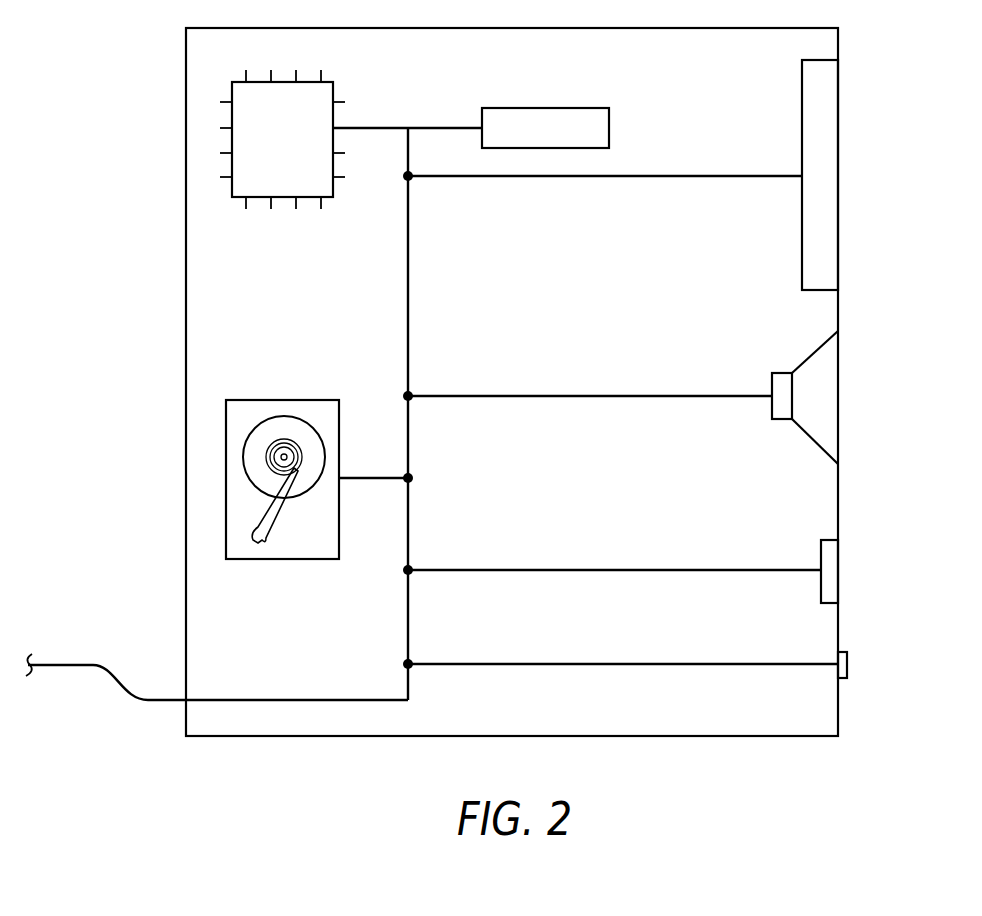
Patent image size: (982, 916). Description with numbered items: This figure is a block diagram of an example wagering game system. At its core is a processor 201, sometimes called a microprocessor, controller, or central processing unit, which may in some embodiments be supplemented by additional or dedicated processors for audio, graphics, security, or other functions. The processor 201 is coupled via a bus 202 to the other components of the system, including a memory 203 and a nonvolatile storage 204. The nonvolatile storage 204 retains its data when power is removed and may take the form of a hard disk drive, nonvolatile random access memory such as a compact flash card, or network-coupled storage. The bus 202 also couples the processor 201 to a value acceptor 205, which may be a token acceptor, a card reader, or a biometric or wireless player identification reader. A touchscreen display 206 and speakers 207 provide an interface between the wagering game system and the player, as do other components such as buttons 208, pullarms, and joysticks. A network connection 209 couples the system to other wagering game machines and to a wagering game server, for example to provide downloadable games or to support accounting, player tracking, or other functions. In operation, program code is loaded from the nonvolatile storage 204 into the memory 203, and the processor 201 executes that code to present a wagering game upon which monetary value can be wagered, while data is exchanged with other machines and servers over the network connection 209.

The processor 201 is at (305, 80).
The bus 202 is at (445, 127).
The memory 203 is at (545, 108).
The nonvolatile storage 204 is at (283, 400).
The value acceptor 205 is at (840, 572).
The touchscreen display 206 is at (840, 176).
The speakers 207 is at (840, 383).
The buttons 208 is at (849, 666).
The network connection 209 is at (59, 662).